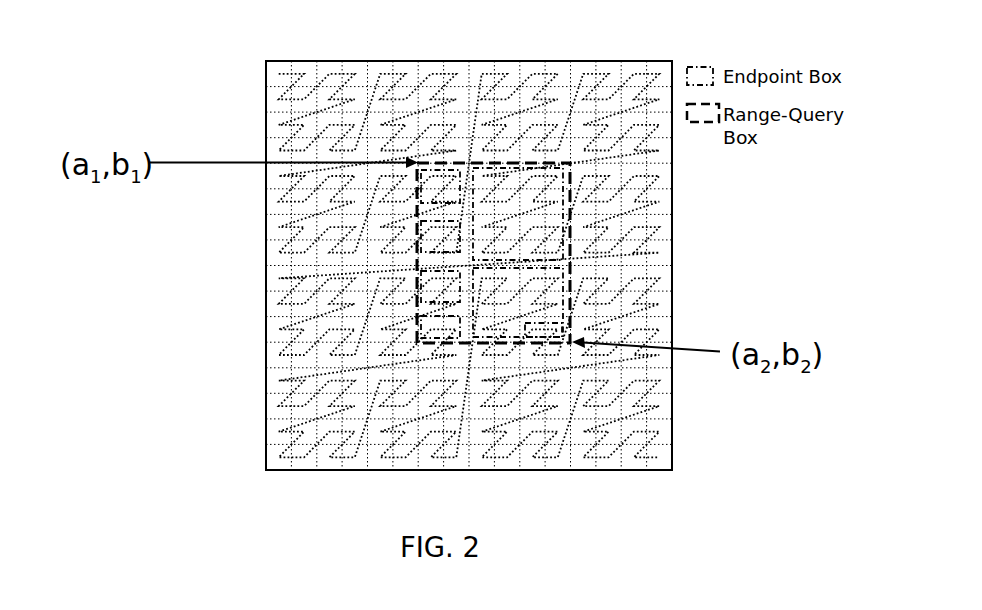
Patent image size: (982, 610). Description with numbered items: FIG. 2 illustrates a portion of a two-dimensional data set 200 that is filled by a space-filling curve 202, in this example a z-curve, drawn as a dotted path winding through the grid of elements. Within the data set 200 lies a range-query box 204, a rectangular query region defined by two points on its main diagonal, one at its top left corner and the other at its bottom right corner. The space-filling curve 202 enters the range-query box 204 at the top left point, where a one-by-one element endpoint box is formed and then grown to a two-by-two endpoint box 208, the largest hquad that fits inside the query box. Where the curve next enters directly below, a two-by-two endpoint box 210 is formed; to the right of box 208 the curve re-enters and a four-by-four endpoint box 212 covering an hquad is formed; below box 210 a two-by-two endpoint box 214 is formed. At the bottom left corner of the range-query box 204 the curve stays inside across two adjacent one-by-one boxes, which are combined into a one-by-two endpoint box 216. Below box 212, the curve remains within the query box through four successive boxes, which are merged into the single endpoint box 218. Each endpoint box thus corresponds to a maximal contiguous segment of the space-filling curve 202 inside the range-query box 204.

The two-dimensional data set 200 is at (288, 36).
The space-filling curve 202 is at (277, 71).
The range-query box 204 is at (433, 163).
The endpoint box 208 is at (418, 200).
The endpoint box 210 is at (418, 230).
The endpoint box 212 is at (557, 163).
The endpoint box 214 is at (418, 283).
The endpoint box 216 is at (418, 328).
The endpoint box 218 is at (566, 277).